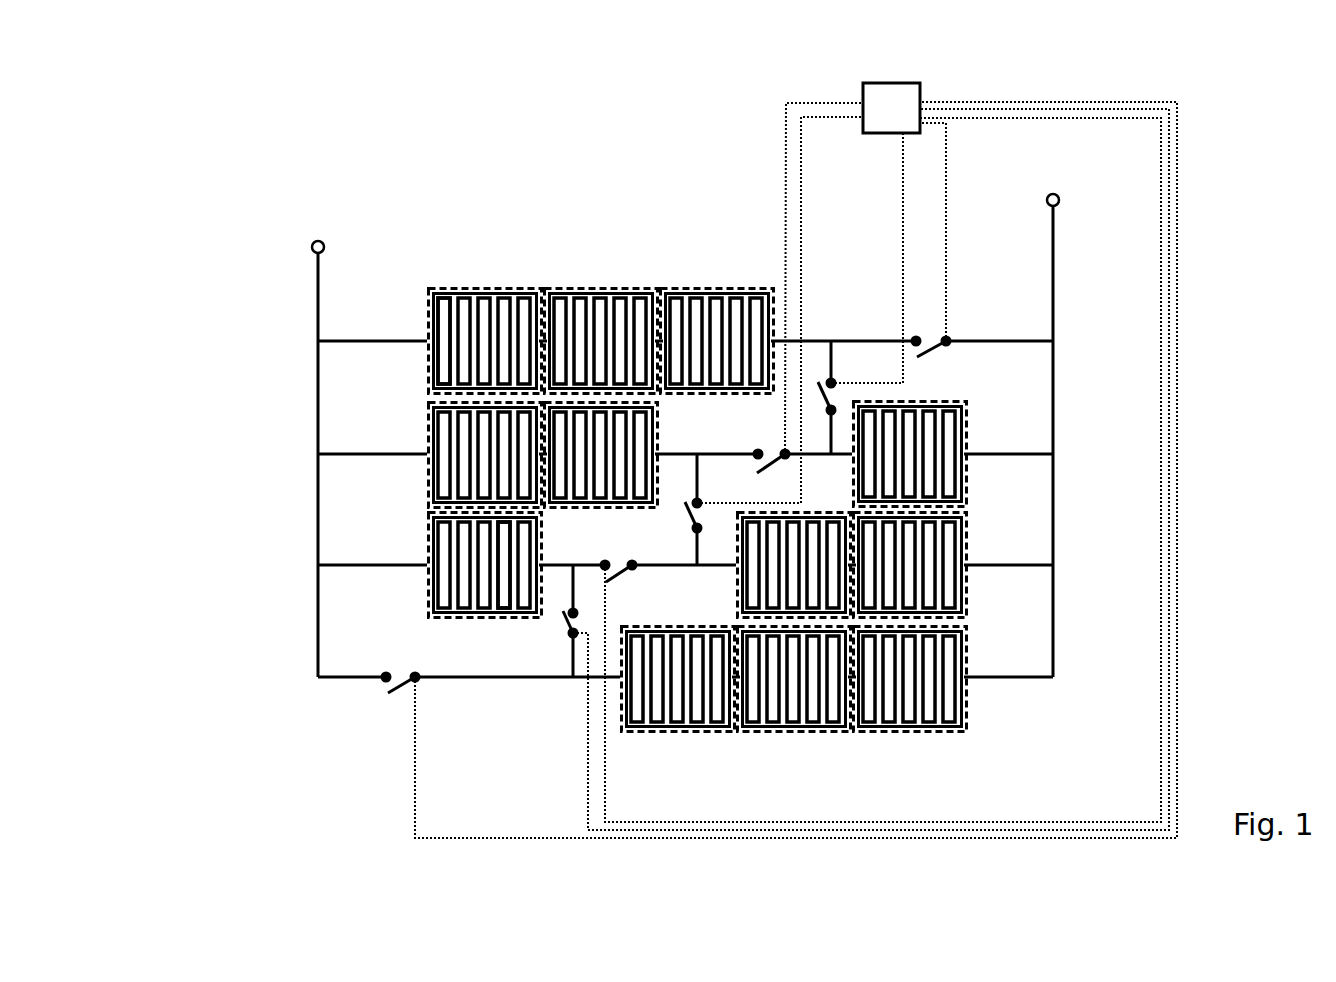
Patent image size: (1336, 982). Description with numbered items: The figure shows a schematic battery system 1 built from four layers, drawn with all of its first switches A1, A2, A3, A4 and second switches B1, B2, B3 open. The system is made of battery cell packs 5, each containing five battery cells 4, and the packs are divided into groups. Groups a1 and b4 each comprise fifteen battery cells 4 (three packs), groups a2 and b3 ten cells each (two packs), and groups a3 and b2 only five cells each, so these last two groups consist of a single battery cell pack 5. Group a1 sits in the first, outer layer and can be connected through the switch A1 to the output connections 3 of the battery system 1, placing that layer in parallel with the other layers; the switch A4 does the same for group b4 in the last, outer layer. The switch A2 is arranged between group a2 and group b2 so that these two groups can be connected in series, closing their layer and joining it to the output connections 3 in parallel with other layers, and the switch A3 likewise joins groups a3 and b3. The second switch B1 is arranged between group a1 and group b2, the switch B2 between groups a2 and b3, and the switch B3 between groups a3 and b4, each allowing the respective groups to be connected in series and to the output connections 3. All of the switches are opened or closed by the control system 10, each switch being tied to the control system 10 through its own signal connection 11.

The battery system 1 is at (195, 204).
The output connections 3 is at (314, 239).
The battery cells 4 is at (443, 305).
The battery cell packs 5 is at (672, 295).
The control system 10 is at (891, 108).
The signal connection 11 is at (947, 197).
The group a1 is at (745, 288).
The group a2 is at (427, 415).
The group a3 is at (423, 600).
The group b2 is at (968, 440).
The group b3 is at (968, 608).
The group b4 is at (903, 732).
The first switch A1 is at (934, 357).
The first switch A2 is at (771, 474).
The first switch A3 is at (625, 579).
The first switch A4 is at (392, 699).
The second switch B1 is at (819, 397).
The second switch B2 is at (680, 509).
The second switch B3 is at (560, 621).